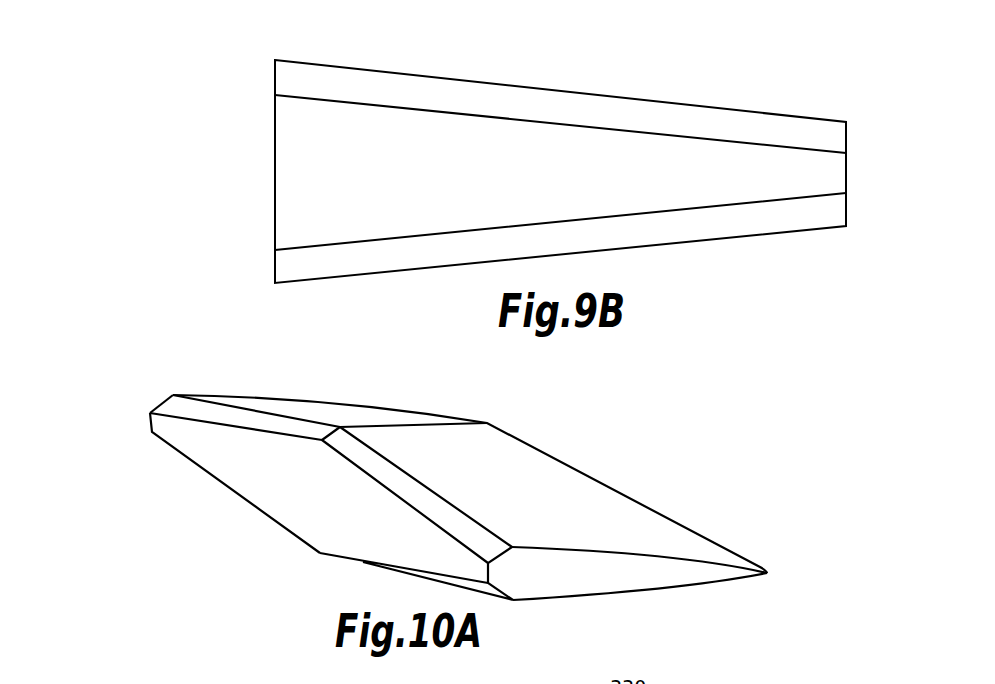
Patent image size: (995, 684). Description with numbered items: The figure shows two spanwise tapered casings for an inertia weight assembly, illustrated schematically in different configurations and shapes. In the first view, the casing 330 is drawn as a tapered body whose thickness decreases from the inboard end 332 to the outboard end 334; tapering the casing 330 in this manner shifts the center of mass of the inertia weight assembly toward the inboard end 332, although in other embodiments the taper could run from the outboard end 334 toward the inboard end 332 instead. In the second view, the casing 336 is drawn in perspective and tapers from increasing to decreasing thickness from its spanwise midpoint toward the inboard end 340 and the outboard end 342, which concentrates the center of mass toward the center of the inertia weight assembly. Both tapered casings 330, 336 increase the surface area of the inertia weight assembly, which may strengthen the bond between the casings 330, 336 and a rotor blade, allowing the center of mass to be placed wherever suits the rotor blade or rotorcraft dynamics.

In FIG. 9B, the casing 330 is at (570, 92).
In FIG. 9B, the inboard end 332 is at (275, 165).
In FIG. 9B, the outboard end 334 is at (846, 173).
In FIG. 10A, the casing 336 is at (586, 488).
In FIG. 10A, the inboard end 340 is at (160, 402).
In FIG. 10A, the outboard end 342 is at (623, 582).